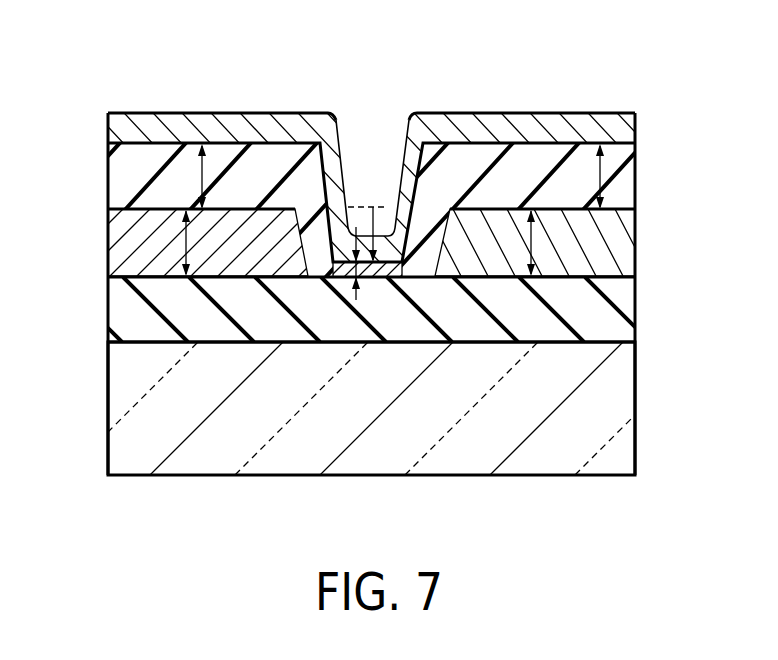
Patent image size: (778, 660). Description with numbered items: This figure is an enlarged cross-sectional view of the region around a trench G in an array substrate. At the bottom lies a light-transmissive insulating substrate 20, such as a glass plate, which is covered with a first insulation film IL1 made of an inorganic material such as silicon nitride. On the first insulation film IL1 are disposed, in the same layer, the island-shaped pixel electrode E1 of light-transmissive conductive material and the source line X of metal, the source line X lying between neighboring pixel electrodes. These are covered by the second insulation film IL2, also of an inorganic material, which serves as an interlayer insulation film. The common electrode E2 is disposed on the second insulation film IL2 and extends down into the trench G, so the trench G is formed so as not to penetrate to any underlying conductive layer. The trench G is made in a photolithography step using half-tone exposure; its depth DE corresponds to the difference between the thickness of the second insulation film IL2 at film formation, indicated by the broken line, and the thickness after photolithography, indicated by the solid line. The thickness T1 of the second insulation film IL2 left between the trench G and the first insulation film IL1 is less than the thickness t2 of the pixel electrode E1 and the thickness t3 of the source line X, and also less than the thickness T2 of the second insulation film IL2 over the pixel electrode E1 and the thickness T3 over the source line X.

The insulating substrate 20 is at (627, 422).
The first insulation film IL1 is at (627, 312).
The pixel electrode E1 is at (112, 240).
The source line X is at (627, 238).
The trench G is at (450, 209).
The second insulation film IL2 is at (627, 182).
The common electrode E2 is at (627, 132).
The thickness of the second insulation film on the pixel electrode T2 is at (202, 174).
The thickness of the second insulation film on the source line T3 is at (600, 174).
The thickness of the pixel electrode t2 is at (186, 258).
The thickness of the source line t3 is at (531, 242).
The depth of the trench DE is at (372, 210).
The thickness of the second insulation film left between the trench and the first in T1 is at (356, 268).